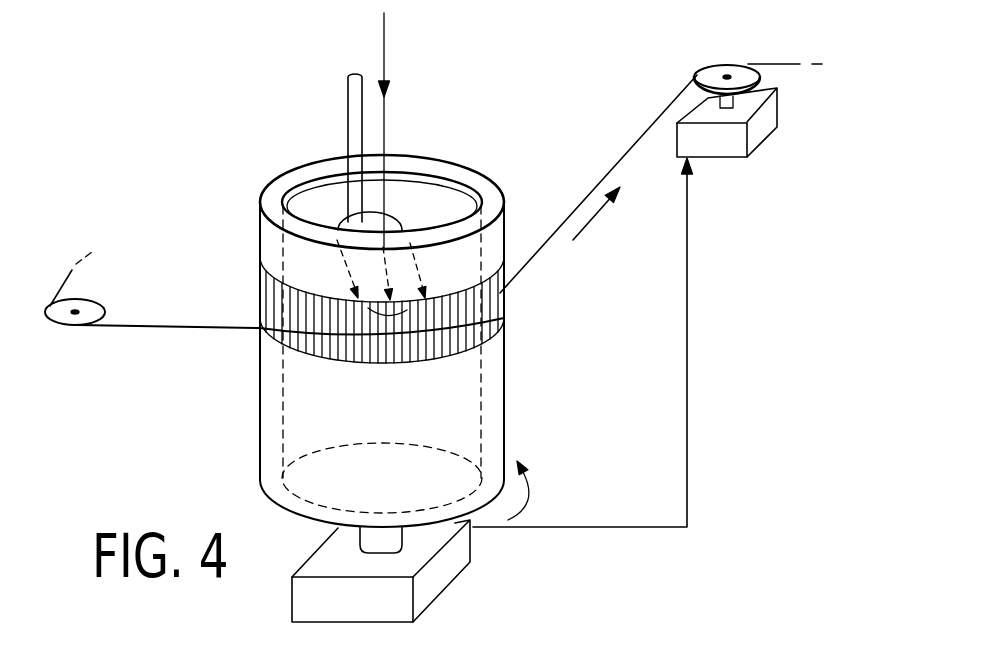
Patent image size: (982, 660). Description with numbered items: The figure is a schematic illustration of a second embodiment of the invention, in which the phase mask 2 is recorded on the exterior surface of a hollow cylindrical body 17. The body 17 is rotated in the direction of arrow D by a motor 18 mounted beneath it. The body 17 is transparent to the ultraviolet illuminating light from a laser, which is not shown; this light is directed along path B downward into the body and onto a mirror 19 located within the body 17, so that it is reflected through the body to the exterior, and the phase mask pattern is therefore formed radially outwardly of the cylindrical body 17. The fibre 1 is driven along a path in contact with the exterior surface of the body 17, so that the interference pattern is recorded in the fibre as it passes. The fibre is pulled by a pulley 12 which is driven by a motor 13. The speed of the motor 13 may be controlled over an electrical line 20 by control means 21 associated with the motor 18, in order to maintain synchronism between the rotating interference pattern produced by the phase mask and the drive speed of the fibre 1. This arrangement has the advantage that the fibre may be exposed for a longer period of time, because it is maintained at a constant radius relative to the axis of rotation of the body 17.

The fibre 1 is at (625, 157).
The phase mask 2 is at (505, 320).
The pulley 12 is at (703, 72).
The motor 13 is at (763, 125).
The hollow cylindrical body 17 is at (504, 388).
The motor 18 is at (465, 551).
The mirror 19 is at (400, 214).
The electrical line 20 is at (687, 388).
The control means 21 is at (455, 580).
The path B is at (384, 58).
The arrow D is at (530, 490).